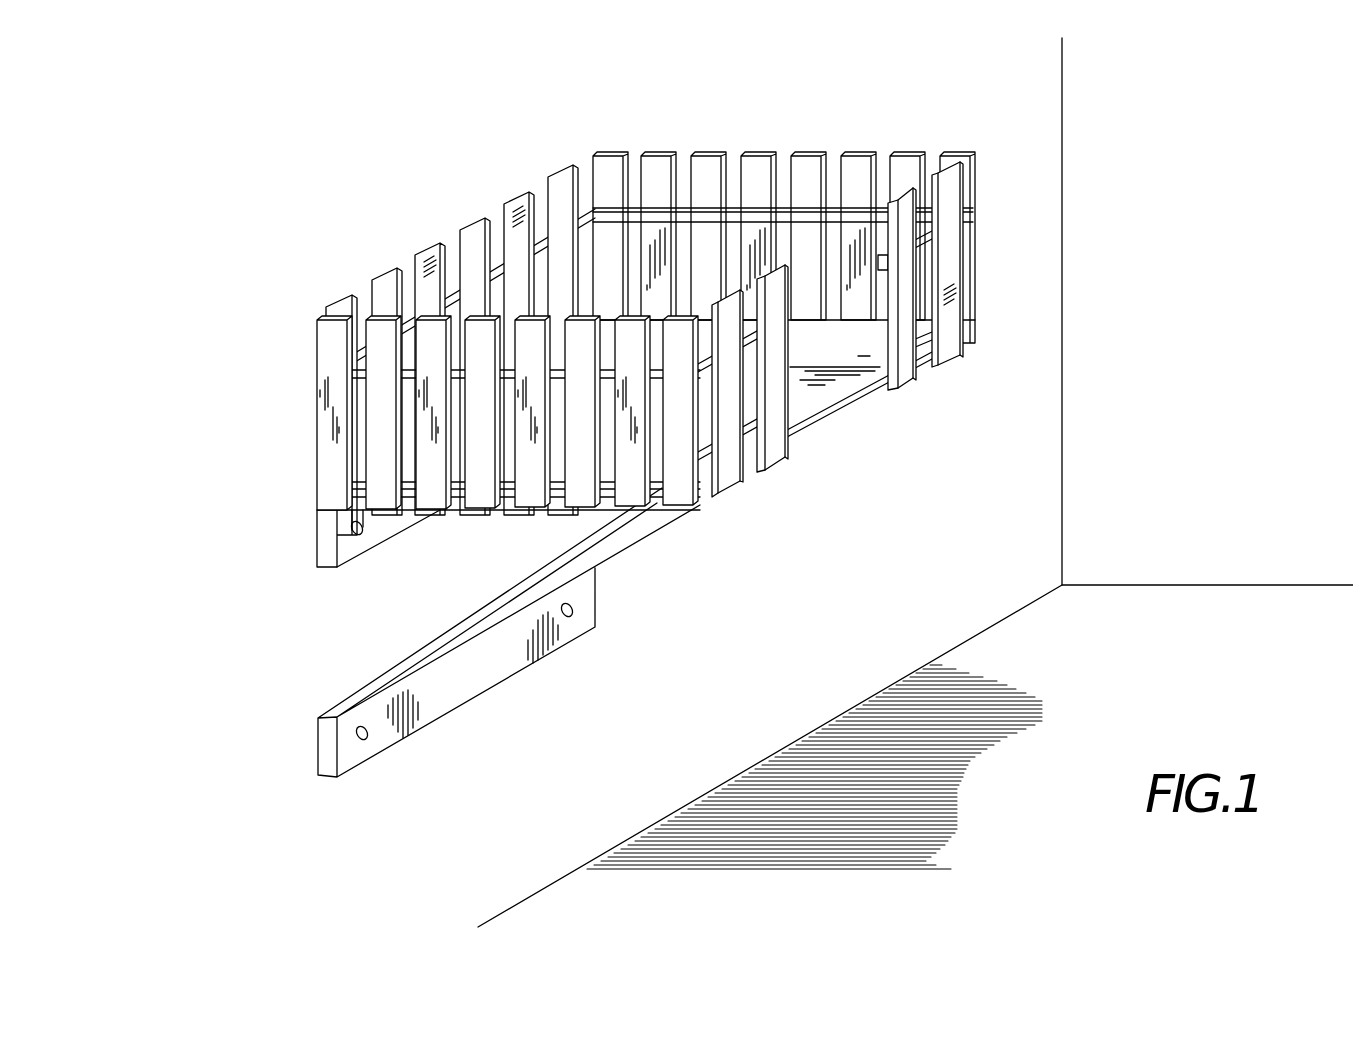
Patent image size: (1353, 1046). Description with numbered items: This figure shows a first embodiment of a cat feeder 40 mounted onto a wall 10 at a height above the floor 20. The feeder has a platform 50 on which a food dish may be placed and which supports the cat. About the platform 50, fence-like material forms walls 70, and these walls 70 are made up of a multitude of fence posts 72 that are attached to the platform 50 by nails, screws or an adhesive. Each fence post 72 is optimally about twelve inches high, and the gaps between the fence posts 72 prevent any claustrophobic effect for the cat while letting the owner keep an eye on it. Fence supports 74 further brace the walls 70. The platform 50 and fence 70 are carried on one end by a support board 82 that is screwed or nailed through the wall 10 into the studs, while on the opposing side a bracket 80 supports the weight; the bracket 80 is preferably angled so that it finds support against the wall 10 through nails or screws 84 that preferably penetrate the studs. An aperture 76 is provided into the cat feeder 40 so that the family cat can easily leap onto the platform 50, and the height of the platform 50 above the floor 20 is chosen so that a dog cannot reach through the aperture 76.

The wall 10 is at (159, 205).
The floor 20 is at (1045, 640).
The cat feeder 40 is at (617, 464).
The platform 50 is at (805, 402).
The walls 70 is at (383, 467).
The fence post 72 is at (327, 443).
The fence support 74 is at (353, 382).
The aperture 76 is at (853, 336).
The bracket 80 is at (395, 667).
The support board 82 is at (325, 545).
The nails or screws 84 is at (364, 527).